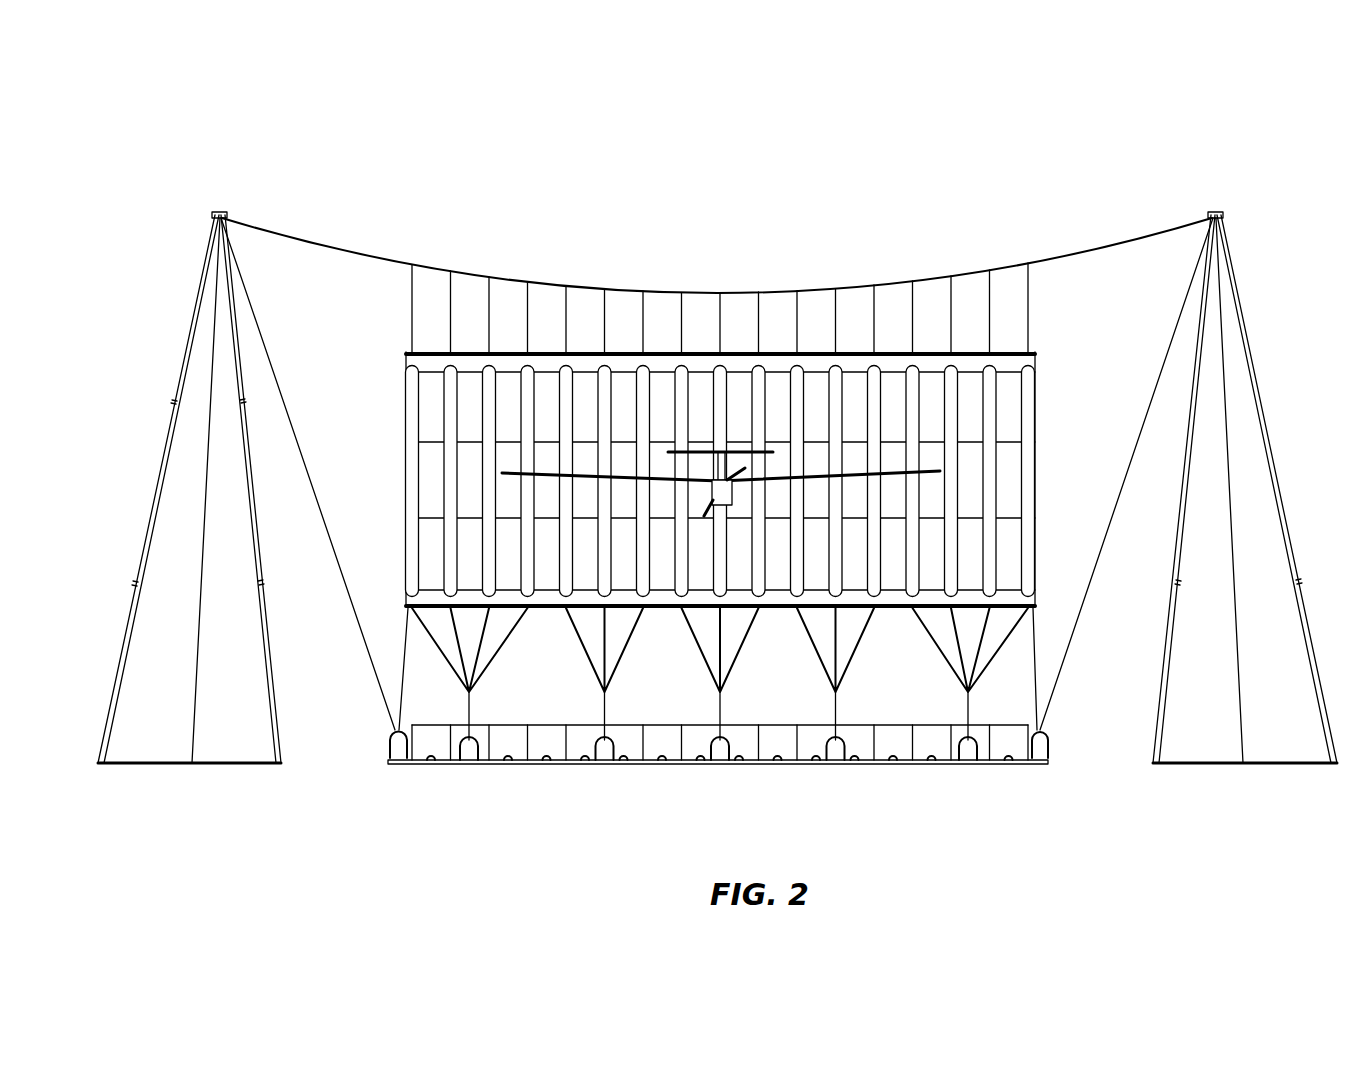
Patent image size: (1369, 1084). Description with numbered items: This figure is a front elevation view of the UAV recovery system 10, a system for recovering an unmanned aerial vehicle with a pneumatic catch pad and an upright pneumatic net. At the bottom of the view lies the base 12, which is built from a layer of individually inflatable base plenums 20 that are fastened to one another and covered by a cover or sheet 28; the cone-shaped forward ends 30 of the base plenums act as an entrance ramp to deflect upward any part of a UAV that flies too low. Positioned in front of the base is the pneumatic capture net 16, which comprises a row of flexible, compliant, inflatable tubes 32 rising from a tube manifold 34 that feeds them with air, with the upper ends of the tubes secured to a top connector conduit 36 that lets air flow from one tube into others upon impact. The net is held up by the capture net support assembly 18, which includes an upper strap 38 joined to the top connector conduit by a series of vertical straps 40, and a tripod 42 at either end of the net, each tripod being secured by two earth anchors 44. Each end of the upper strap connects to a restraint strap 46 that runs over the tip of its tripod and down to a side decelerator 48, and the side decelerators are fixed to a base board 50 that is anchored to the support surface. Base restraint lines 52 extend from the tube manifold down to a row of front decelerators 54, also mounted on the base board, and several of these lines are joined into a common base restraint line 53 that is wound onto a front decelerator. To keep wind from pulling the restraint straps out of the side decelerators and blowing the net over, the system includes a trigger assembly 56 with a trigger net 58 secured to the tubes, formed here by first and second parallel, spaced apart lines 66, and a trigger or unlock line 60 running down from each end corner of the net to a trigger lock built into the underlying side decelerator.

The UAV recovery system 10 is at (1242, 165).
The base 12 is at (725, 745).
The pneumatic capture net 16 is at (713, 462).
The capture net support assembly 18 is at (188, 487).
The base plenum 20 is at (739, 745).
The cover or sheet 28 is at (663, 723).
The forward ends of base plenums 30 is at (739, 745).
The inflatable tubes 32 is at (417, 420).
The tube manifold 34 is at (408, 600).
The top connector conduit 36 is at (413, 362).
The upper strap 38 is at (282, 233).
The vertical straps 40 is at (452, 298).
The tripod 42 is at (160, 445).
The earth anchors 44 is at (198, 642).
The restraint strap 46 is at (262, 327).
The side decelerator 48 is at (393, 748).
The base board 50 is at (767, 763).
The base restraint lines 52 is at (945, 660).
The common base restraint line 53 is at (840, 710).
The front decelerator 54 is at (973, 750).
The trigger assembly 56 is at (1075, 368).
The trigger net 58 is at (1010, 434).
The trigger or unlock line 60 is at (400, 690).
The first and second parallel spaced apart lines 66 is at (713, 481).